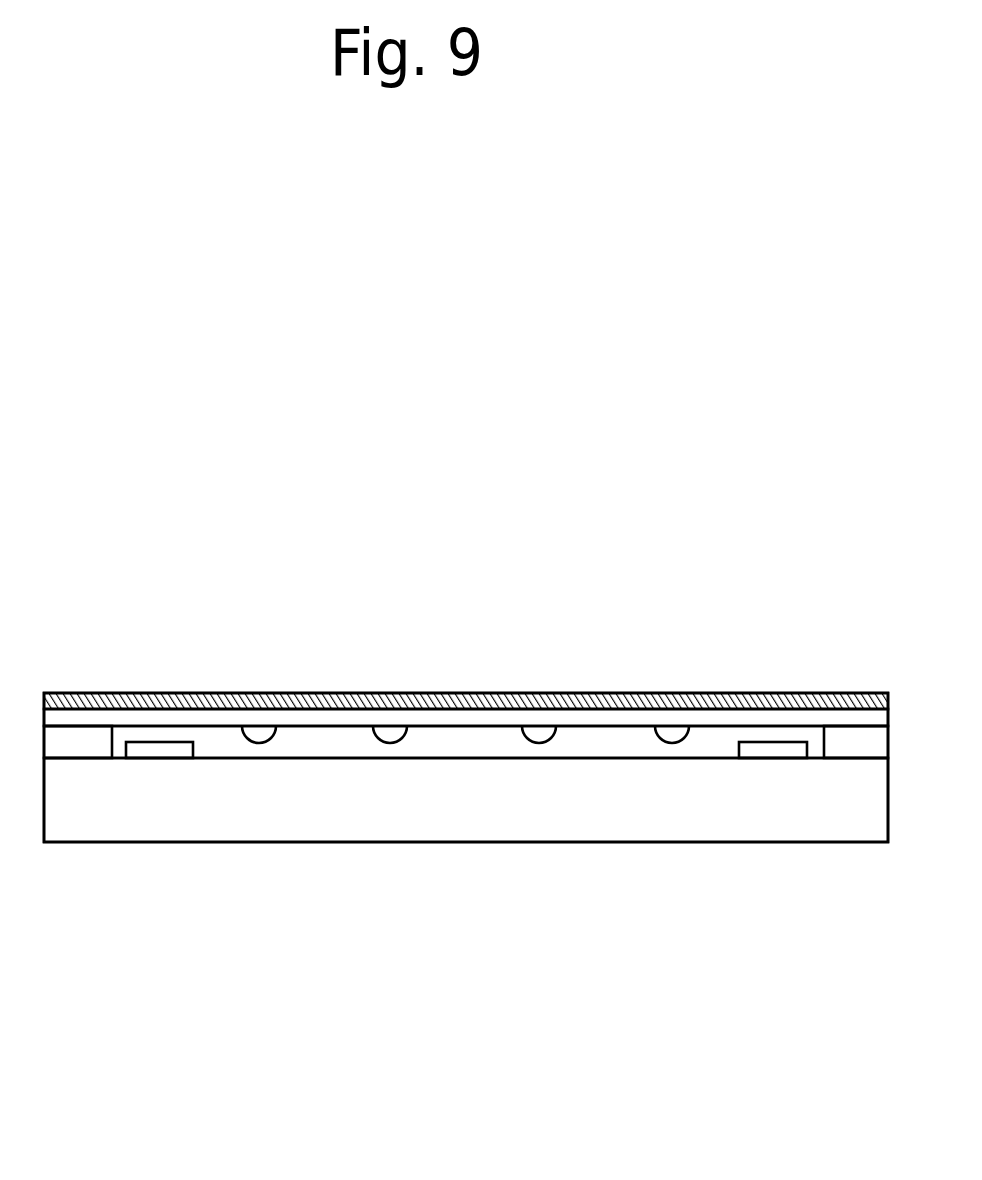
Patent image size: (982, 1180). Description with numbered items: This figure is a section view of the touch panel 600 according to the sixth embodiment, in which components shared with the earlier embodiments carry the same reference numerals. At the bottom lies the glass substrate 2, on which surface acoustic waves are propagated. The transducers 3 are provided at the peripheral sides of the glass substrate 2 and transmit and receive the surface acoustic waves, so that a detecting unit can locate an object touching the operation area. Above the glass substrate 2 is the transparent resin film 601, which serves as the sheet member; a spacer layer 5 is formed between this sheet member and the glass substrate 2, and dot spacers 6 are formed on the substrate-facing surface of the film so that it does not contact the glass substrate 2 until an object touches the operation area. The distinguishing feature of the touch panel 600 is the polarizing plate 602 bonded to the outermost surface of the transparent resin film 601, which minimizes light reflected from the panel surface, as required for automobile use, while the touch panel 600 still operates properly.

The touch panel 600 is at (477, 525).
The polarizing plate 602 is at (275, 693).
The transparent resin film 601 is at (623, 693).
The spacer layer 5 is at (78, 741).
The transducer 3 is at (177, 750).
The dot spacer 6 is at (677, 742).
The glass substrate 2 is at (540, 823).